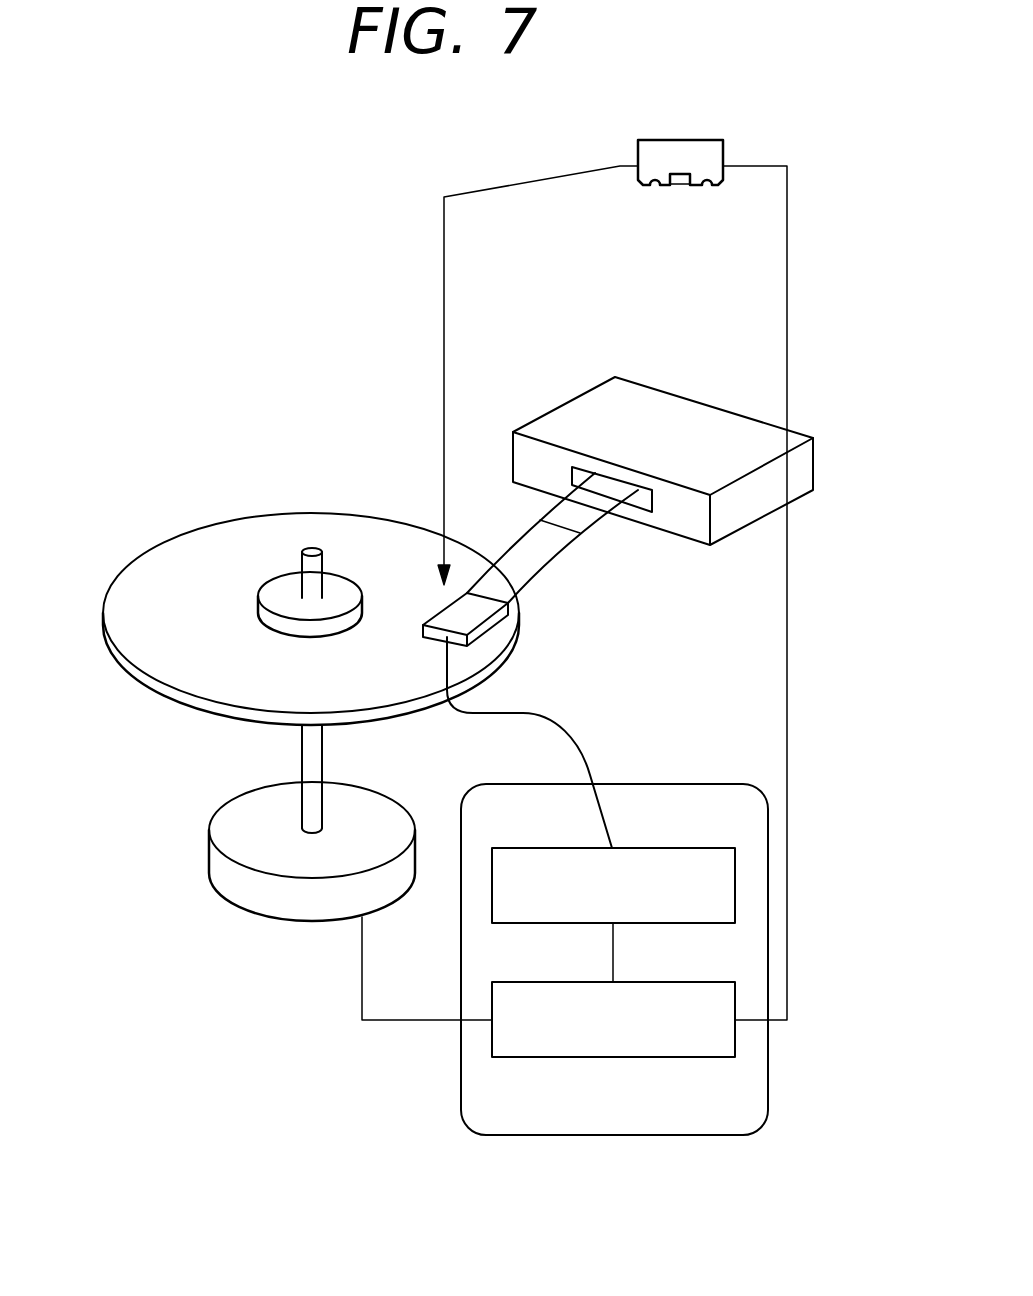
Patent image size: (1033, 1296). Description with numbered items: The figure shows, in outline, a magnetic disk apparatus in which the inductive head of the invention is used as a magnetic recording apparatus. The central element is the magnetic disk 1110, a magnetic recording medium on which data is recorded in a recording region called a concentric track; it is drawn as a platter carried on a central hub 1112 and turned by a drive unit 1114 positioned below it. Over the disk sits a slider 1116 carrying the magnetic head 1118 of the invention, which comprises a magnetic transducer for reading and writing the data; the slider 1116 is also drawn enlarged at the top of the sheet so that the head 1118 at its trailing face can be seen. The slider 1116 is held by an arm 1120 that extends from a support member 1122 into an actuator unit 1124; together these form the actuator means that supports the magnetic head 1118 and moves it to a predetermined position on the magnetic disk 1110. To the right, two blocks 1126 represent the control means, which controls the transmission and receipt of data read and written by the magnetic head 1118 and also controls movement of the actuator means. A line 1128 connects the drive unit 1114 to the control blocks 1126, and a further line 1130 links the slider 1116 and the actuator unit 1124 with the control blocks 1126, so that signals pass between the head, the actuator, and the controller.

The magnetic disk 1110 is at (165, 672).
The spindle 1112 is at (308, 567).
The spindle motor 1114 is at (237, 890).
The magnetic head slider 1116 is at (679, 142).
The magnetic head 1118 is at (674, 186).
The suspension 1120 is at (535, 558).
The arm 1122 is at (572, 502).
The actuator 1124 is at (673, 408).
The control circuit 1126 is at (727, 882).
The signal line 1128 is at (362, 997).
The signal line 1130 is at (787, 256).